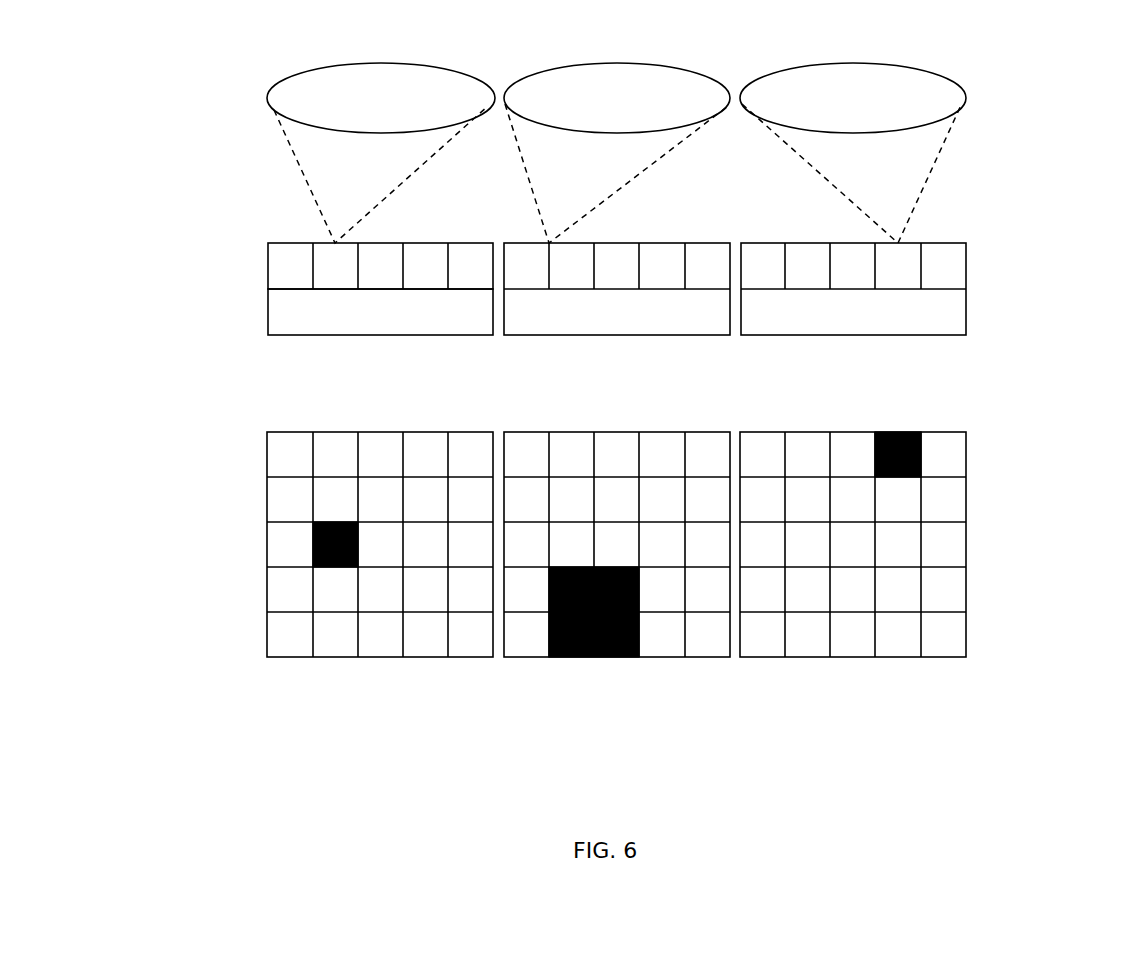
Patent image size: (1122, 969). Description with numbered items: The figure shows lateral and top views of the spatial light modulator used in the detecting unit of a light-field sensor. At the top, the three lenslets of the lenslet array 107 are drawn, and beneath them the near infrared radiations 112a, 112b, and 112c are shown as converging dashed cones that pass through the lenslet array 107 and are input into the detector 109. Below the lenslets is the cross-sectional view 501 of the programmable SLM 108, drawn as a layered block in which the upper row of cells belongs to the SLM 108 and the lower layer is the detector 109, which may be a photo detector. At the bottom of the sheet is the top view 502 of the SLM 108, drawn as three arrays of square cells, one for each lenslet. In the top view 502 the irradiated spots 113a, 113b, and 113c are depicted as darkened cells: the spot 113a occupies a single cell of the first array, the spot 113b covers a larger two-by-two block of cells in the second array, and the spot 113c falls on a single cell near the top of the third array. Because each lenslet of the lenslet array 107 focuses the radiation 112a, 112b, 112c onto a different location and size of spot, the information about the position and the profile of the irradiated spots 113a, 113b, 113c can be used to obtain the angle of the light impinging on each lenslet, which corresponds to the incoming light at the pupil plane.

The lenslet array 107 is at (1010, 38).
The near infrared radiation 112a is at (326, 158).
The near infrared radiation 112b is at (539, 152).
The near infrared radiation 112c is at (841, 168).
The cross-sectional view 501 is at (186, 237).
The top view 502 is at (554, 563).
The spatial light modulator 108 is at (344, 489).
The detector 109 is at (281, 314).
The irradiated spot 113a is at (333, 568).
The irradiated spot 113b is at (568, 658).
The irradiated spot 113c is at (912, 432).